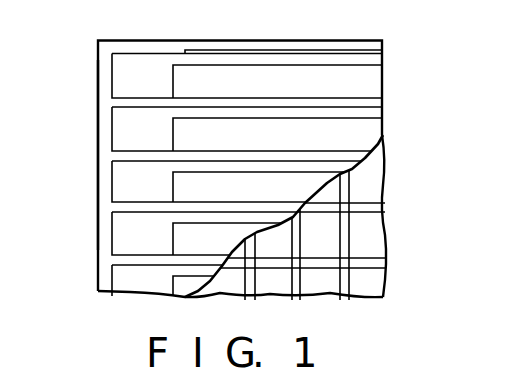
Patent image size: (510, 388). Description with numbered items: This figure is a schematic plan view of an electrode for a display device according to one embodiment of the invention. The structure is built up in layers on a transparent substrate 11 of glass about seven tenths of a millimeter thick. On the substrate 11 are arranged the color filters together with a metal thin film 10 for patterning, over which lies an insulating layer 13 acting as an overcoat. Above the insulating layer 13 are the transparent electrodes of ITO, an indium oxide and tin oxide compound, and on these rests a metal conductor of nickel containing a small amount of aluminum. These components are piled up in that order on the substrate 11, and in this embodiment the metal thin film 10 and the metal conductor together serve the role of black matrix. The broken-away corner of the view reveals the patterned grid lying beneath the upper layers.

The metal thin film for patterning 10 is at (372, 264).
The transparent substrate 11 is at (98, 51).
The insulating layer 13 is at (190, 52).